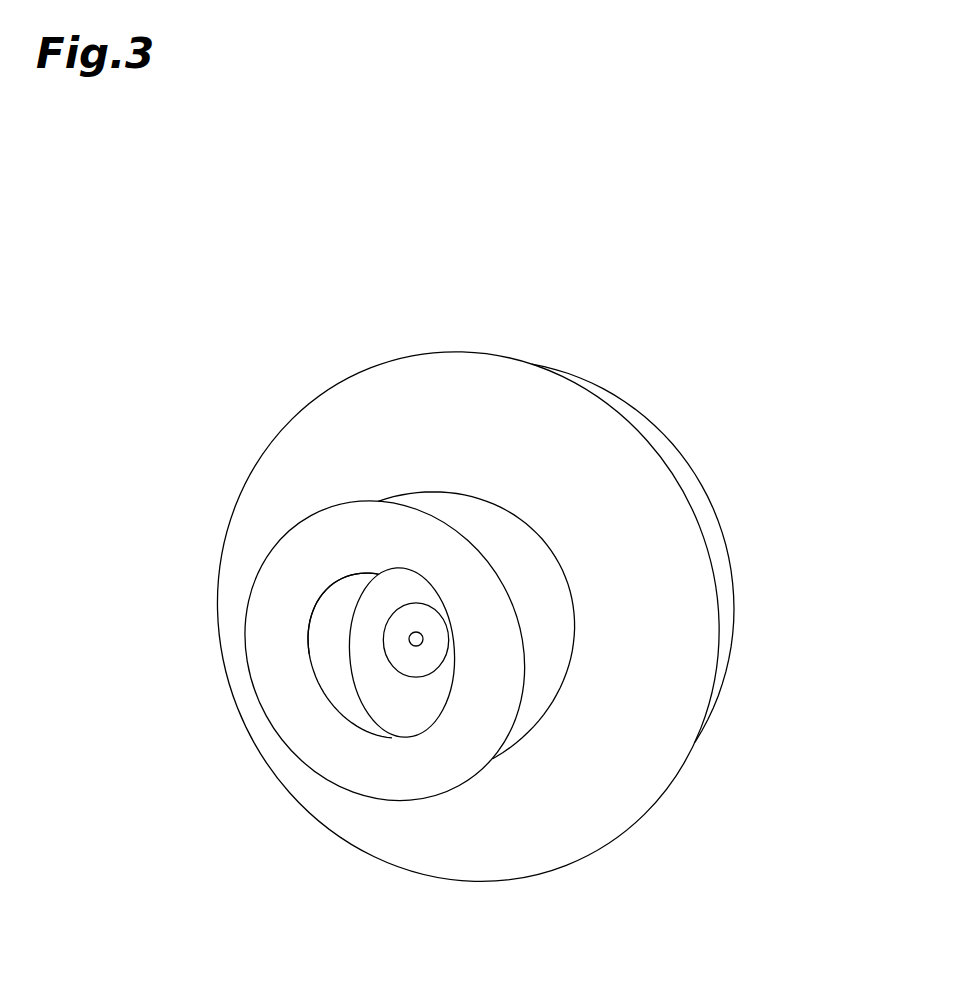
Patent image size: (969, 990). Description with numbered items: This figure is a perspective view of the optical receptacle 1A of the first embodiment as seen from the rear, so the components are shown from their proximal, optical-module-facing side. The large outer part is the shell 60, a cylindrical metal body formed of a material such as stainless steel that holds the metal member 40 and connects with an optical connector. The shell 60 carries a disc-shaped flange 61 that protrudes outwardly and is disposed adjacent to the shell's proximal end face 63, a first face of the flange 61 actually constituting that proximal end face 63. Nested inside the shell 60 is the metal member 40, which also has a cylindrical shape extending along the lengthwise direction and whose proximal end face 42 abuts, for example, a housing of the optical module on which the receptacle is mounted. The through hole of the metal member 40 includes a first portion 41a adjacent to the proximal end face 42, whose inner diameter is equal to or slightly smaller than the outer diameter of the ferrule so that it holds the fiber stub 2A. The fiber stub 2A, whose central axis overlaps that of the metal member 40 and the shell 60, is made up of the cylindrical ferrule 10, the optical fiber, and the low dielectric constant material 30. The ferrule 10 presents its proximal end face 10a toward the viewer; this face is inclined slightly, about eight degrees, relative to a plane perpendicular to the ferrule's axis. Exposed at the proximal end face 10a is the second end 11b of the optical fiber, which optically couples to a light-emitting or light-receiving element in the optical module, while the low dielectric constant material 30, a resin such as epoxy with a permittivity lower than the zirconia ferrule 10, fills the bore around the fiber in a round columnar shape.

The optical receptacle 1A is at (652, 222).
The fiber stub 2A is at (423, 693).
The ferrule 10 is at (365, 625).
The proximal end face 10a is at (367, 607).
The second end 11b is at (410, 644).
The low dielectric constant material 30 is at (411, 660).
The metal member 40 is at (351, 803).
The first portion 41a is at (326, 655).
The proximal end face 42 is at (386, 792).
The shell 60 is at (627, 400).
The flange 61 is at (721, 566).
The proximal end face 63 is at (637, 782).